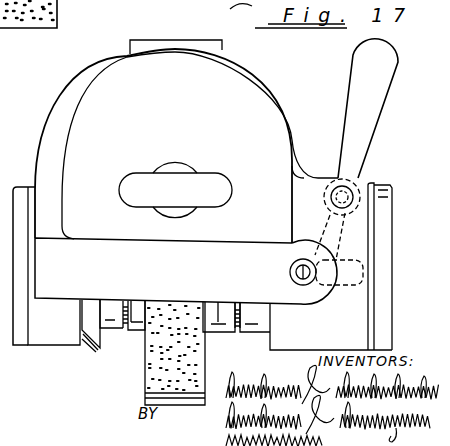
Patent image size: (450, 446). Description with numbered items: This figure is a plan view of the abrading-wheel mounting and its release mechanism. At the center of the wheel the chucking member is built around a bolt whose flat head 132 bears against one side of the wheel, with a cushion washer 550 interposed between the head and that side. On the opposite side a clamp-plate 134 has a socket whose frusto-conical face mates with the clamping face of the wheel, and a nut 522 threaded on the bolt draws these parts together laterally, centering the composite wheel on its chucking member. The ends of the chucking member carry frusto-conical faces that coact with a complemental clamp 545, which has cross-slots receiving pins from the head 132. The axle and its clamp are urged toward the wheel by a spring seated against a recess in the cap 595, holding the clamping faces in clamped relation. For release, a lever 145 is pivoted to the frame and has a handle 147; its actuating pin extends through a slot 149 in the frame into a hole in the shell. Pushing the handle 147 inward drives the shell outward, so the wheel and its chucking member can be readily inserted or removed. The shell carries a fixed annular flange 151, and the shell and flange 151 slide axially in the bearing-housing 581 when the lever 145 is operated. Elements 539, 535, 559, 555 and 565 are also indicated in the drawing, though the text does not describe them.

The handle 147 is at (372, 117).
The lever 145 is at (346, 232).
The slot opening 539 is at (204, 208).
The cap 595 is at (380, 265).
The slot 149 is at (360, 289).
The bearing-housing 581 is at (355, 323).
The annular flange 151 is at (268, 316).
The nut 522 is at (227, 306).
The clamp-plate 134 is at (213, 304).
The cushion washer 550 is at (150, 303).
The cushion pad 535 is at (152, 374).
The head of the bolt 132 is at (134, 305).
The complemental clamp 545 is at (112, 329).
The wedge 559 is at (92, 354).
The base flange 555 is at (55, 340).
The side wall 565 is at (18, 340).